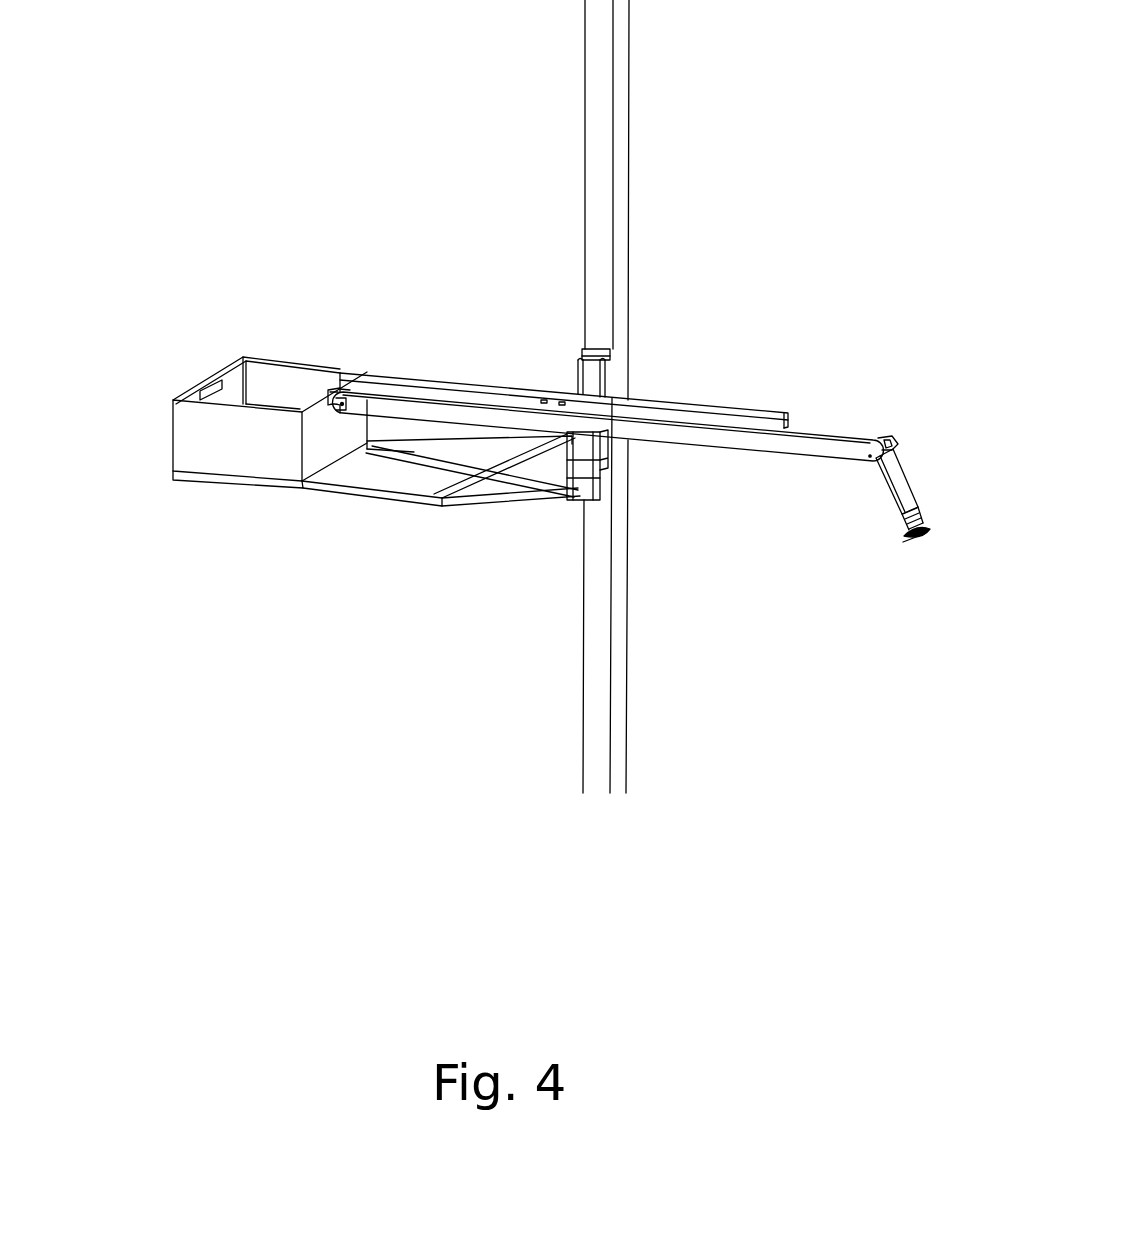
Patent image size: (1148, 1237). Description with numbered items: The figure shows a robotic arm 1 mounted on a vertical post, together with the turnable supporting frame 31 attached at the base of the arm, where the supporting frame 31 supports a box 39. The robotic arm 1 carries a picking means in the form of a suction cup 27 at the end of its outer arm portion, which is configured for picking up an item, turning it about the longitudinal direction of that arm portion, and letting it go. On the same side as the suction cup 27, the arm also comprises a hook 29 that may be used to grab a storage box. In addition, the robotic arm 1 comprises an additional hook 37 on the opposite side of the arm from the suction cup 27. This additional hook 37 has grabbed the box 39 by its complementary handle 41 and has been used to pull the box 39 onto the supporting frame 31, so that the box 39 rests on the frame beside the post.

The robotic arm 1 is at (498, 300).
The suction cup 27 is at (908, 543).
The hook 29 is at (893, 447).
The supporting frame 31 is at (418, 660).
The additional hook 37 is at (332, 373).
The box 39 is at (233, 293).
The complementary handle 41 is at (342, 404).